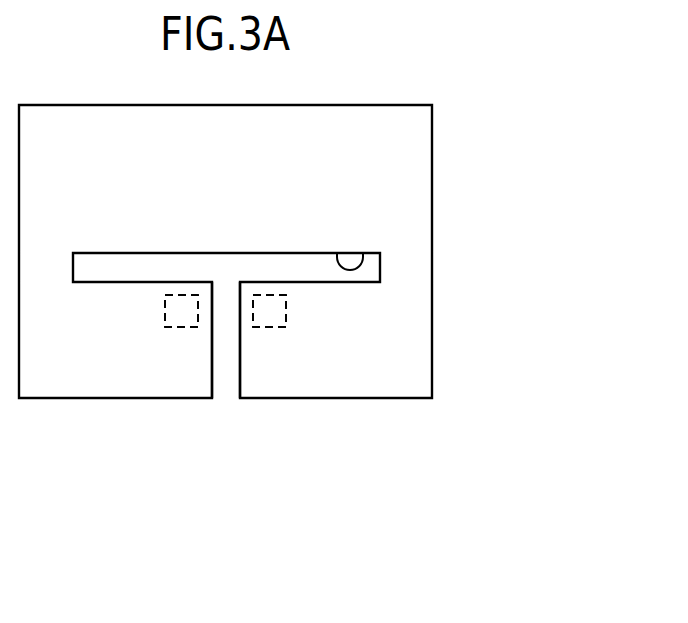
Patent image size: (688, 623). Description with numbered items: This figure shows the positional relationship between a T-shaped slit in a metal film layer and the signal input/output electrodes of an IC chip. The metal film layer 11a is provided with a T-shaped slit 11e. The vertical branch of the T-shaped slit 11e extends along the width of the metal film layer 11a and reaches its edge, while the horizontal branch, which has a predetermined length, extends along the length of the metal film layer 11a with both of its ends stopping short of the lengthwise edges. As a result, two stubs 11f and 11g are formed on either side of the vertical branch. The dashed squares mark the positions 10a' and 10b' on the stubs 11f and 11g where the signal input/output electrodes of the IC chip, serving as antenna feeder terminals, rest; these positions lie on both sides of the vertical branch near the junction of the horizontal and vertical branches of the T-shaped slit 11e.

The metal film layer 11a is at (427, 188).
The T-shaped slit 11e is at (361, 254).
The stub 11f is at (190, 380).
The stub 11g is at (254, 382).
The position 10a' is at (167, 376).
The position 10b' is at (293, 373).